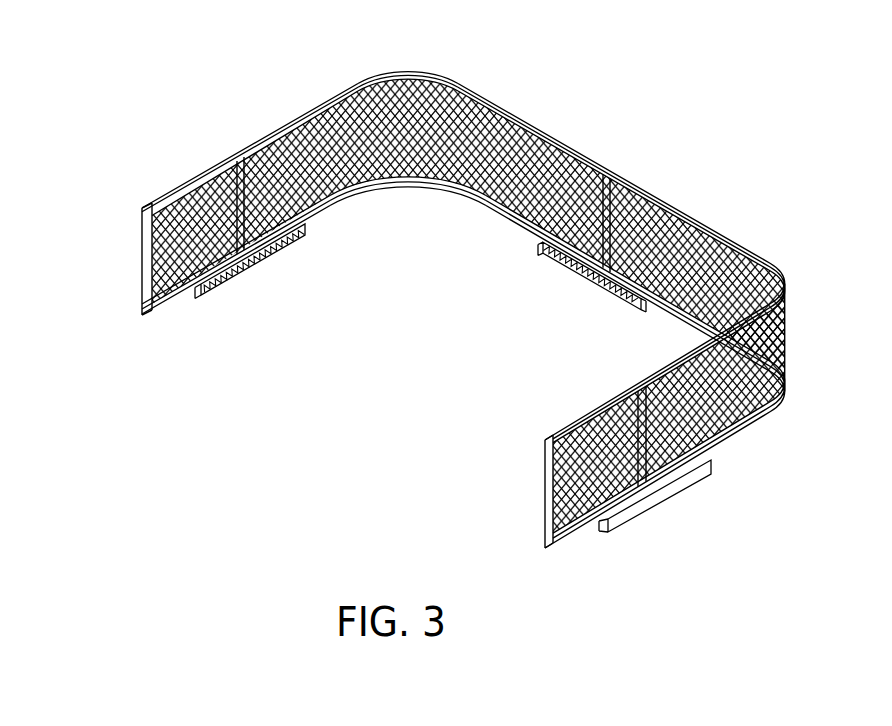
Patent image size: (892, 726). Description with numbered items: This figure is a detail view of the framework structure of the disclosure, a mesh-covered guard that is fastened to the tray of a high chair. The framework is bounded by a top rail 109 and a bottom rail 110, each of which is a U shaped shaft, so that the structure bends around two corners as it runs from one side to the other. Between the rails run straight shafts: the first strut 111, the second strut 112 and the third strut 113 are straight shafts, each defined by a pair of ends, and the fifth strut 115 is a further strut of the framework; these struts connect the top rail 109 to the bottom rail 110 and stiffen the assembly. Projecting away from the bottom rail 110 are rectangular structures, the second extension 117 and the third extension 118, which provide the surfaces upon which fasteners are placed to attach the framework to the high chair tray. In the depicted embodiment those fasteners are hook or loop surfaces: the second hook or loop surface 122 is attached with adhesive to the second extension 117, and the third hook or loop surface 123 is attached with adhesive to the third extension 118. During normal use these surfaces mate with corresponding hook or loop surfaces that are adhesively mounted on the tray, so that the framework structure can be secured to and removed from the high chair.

The top rail 109 is at (450, 74).
The bottom rail 110 is at (452, 187).
The first strut 111 is at (537, 475).
The second strut 112 is at (140, 253).
The third strut 113 is at (631, 438).
The fifth strut 115 is at (230, 168).
The second extension 117 is at (530, 236).
The third extension 118 is at (297, 229).
The second hook or loop surface 122 is at (575, 266).
The third hook or loop surface 123 is at (262, 250).